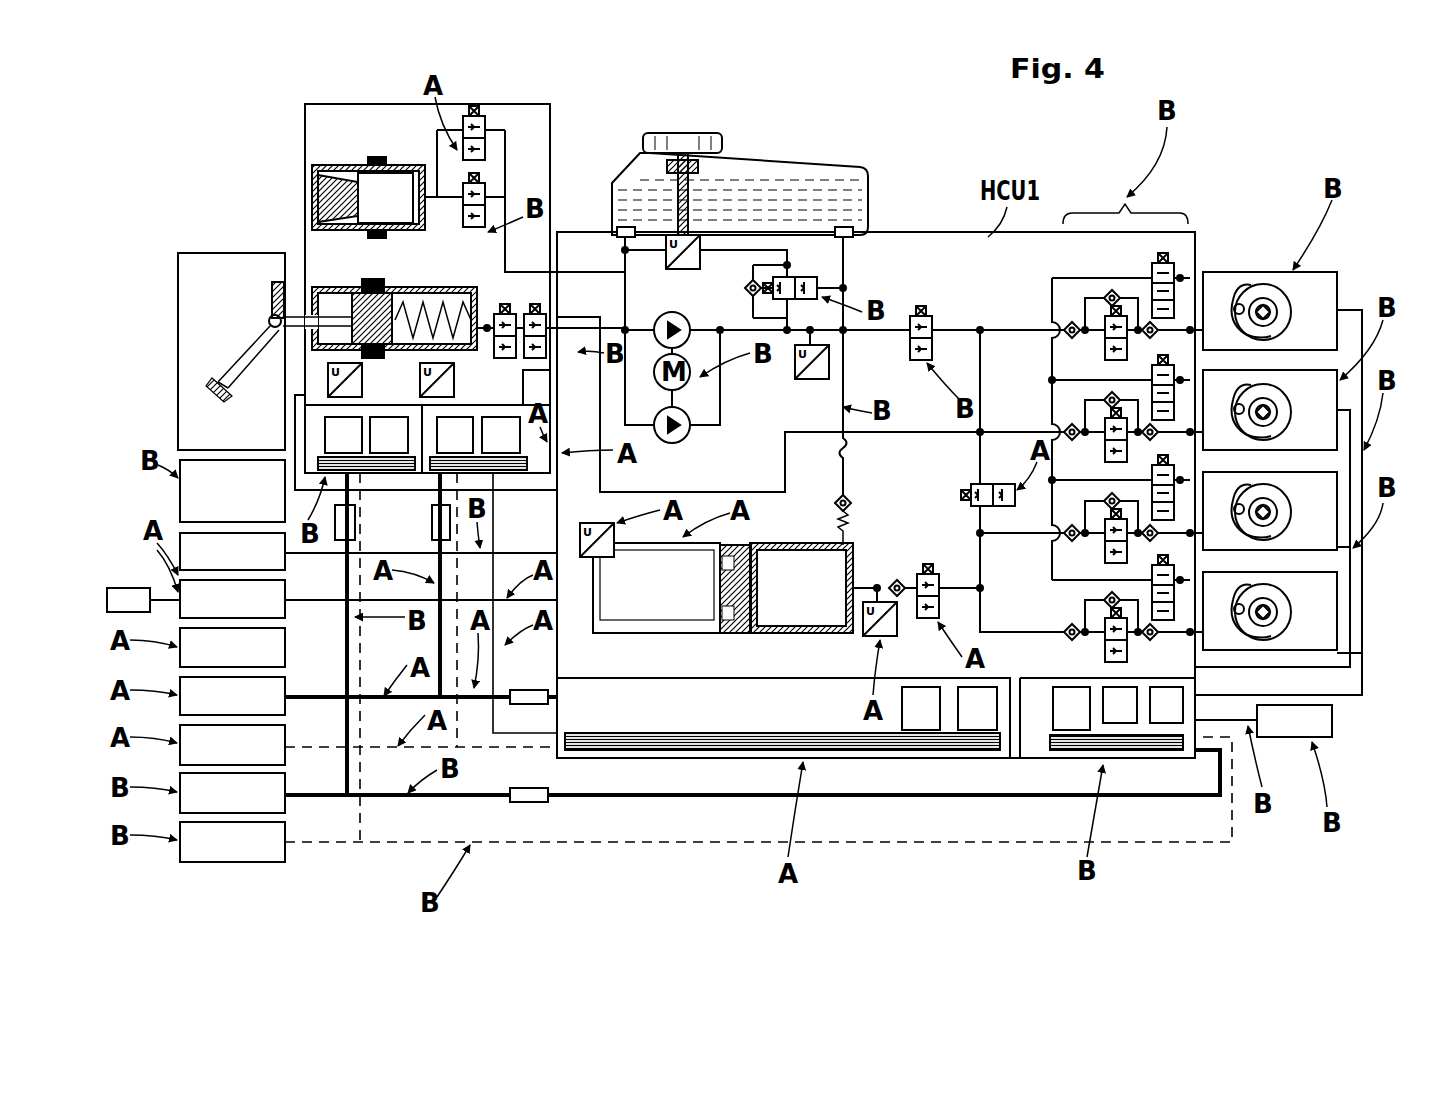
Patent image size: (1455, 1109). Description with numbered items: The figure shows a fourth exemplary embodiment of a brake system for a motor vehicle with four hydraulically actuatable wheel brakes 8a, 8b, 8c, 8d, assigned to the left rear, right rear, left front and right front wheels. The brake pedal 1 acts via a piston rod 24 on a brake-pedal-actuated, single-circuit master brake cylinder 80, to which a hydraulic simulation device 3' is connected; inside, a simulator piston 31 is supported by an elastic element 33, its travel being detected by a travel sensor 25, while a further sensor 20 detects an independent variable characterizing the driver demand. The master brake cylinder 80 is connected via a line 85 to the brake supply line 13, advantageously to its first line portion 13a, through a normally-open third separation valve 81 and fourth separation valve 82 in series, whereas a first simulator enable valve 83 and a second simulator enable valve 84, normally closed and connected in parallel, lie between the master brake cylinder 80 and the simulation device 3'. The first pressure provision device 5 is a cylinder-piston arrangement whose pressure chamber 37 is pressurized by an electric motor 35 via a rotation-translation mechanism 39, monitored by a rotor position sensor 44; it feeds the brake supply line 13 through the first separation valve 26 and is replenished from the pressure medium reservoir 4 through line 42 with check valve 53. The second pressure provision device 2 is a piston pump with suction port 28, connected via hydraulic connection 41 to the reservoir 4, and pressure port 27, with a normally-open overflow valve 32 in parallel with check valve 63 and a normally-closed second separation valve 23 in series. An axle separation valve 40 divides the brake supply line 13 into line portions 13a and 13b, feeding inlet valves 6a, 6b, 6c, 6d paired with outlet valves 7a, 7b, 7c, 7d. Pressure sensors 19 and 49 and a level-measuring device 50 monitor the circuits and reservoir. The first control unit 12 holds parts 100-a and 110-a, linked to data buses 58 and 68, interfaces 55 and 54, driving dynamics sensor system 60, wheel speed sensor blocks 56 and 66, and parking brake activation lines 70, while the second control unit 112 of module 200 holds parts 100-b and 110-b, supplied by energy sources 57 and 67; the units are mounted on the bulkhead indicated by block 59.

The brake pedal 1 is at (250, 347).
The second electrically controllable pressure provision device 2 is at (700, 393).
The hydraulic simulation device 3' is at (423, 265).
The pressure medium reservoir 4 is at (787, 190).
The first electrically controllable pressure provision device 5 is at (723, 564).
The inlet valve 6a is at (1104, 350).
The inlet valve 6b is at (1104, 450).
The inlet valve 6c is at (1104, 550).
The inlet valve 6d is at (1104, 650).
The outlet valve 7a is at (1150, 288).
The outlet valve 7b is at (1150, 390).
The outlet valve 7c is at (1150, 490).
The outlet valve 7d is at (1166, 622).
The wheel brake 8a is at (1283, 333).
The wheel brake 8b is at (1283, 433).
The wheel brake 8c is at (1283, 533).
The wheel brake 8d is at (1283, 633).
The first electronic open-loop and closed-loop control unit 12 is at (878, 783).
The brake supply line 13 is at (977, 373).
The first line portion 13a is at (983, 380).
The second line portion 13b is at (983, 550).
The first pressure sensor 19 is at (877, 640).
The sensor 20 is at (420, 381).
The second separation valve 23 is at (902, 328).
The piston rod 24 is at (282, 302).
The travel sensor 25 is at (328, 383).
The first separation valve 26 is at (923, 618).
The pressure port 27 is at (740, 323).
The suction port 28 is at (622, 320).
The simulator piston 31 is at (328, 173).
The overflow valve 32 is at (803, 267).
The elastic element 33 is at (333, 187).
The electric motor 35 is at (622, 598).
The pressure chamber 37 is at (807, 595).
The rotation-translation mechanism 39 is at (717, 590).
The axle separation valve 40 is at (993, 486).
The hydraulic connection 41 is at (623, 258).
The replenishment line 42 is at (868, 470).
The rotor position sensor 44 is at (590, 523).
The second pressure sensor 49 is at (797, 363).
The level-measuring device 50 is at (668, 270).
The check valve 53 is at (838, 502).
The human-machine interface 54 is at (285, 560).
The human-machine interface 55 is at (285, 607).
The first wheel speed sensors 56 is at (285, 657).
The first electrical energy source 57 is at (285, 705).
The data bus 58 is at (285, 752).
The block 59 is at (180, 470).
The driving dynamics sensor system 60 is at (124, 588).
The check valve 63 is at (748, 291).
The second wheel speed sensors 66 is at (1318, 720).
The second electrical energy source 67 is at (285, 800).
The data bus 68 is at (285, 850).
The activation lines 70 is at (1364, 656).
The master brake cylinder 80 is at (317, 277).
The third separation valve 81 is at (514, 300).
The fourth separation valve 82 is at (558, 274).
The first simulator enable valve 83 is at (455, 116).
The second simulator enable valve 84 is at (460, 212).
The line 85 is at (712, 490).
The part of the first electrical device 100-a is at (655, 752).
The part of the first electrical device 100-b is at (517, 477).
The part of the second electrical device 110-a is at (1163, 752).
The part of the second electrical device 110-b is at (387, 483).
The second electronic open-loop and closed-loop control unit 112 is at (550, 452).
The second module 200 is at (510, 153).